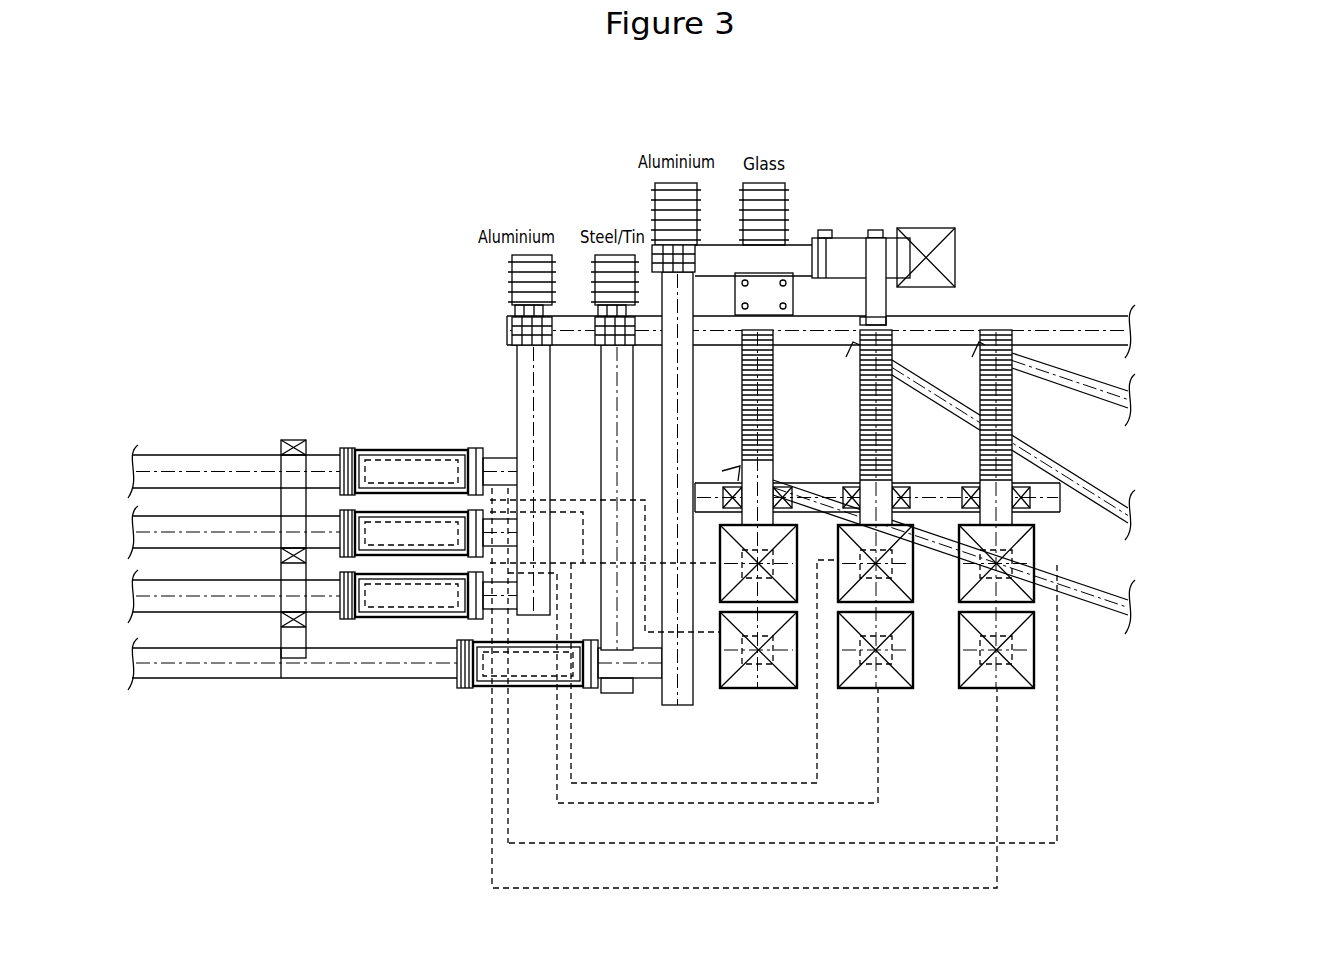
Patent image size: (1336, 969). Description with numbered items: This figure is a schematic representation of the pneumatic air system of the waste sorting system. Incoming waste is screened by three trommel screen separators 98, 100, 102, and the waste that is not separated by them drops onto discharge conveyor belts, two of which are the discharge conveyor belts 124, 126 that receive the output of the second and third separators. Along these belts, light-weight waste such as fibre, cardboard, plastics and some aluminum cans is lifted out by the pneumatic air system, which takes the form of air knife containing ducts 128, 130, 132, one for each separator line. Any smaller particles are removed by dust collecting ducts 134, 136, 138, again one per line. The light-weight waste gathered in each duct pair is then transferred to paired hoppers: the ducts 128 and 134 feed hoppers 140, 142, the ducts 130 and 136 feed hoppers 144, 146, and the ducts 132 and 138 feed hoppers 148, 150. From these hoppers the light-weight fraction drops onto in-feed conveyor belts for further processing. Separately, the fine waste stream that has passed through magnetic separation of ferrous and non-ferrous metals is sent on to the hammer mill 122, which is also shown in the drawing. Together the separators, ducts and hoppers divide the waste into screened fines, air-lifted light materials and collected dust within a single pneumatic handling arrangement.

The trommel screen separator 98 is at (453, 577).
The trommel screen separator 100 is at (398, 510).
The trommel screen separator 102 is at (363, 453).
The hammer mill 122 is at (487, 688).
The discharge conveyor belt 124 is at (488, 527).
The discharge conveyor belt 126 is at (506, 488).
The air knife containing duct 128 is at (1060, 716).
The air knife containing duct 130 is at (818, 767).
The air knife containing duct 132 is at (583, 512).
The dust collecting duct 134 is at (1000, 860).
The dust collecting duct 136 is at (880, 748).
The dust collecting duct 138 is at (710, 680).
The hopper 140 is at (1034, 542).
The hopper 142 is at (1035, 662).
The hopper 144 is at (875, 535).
The hopper 146 is at (917, 635).
The hopper 148 is at (785, 528).
The hopper 150 is at (743, 690).